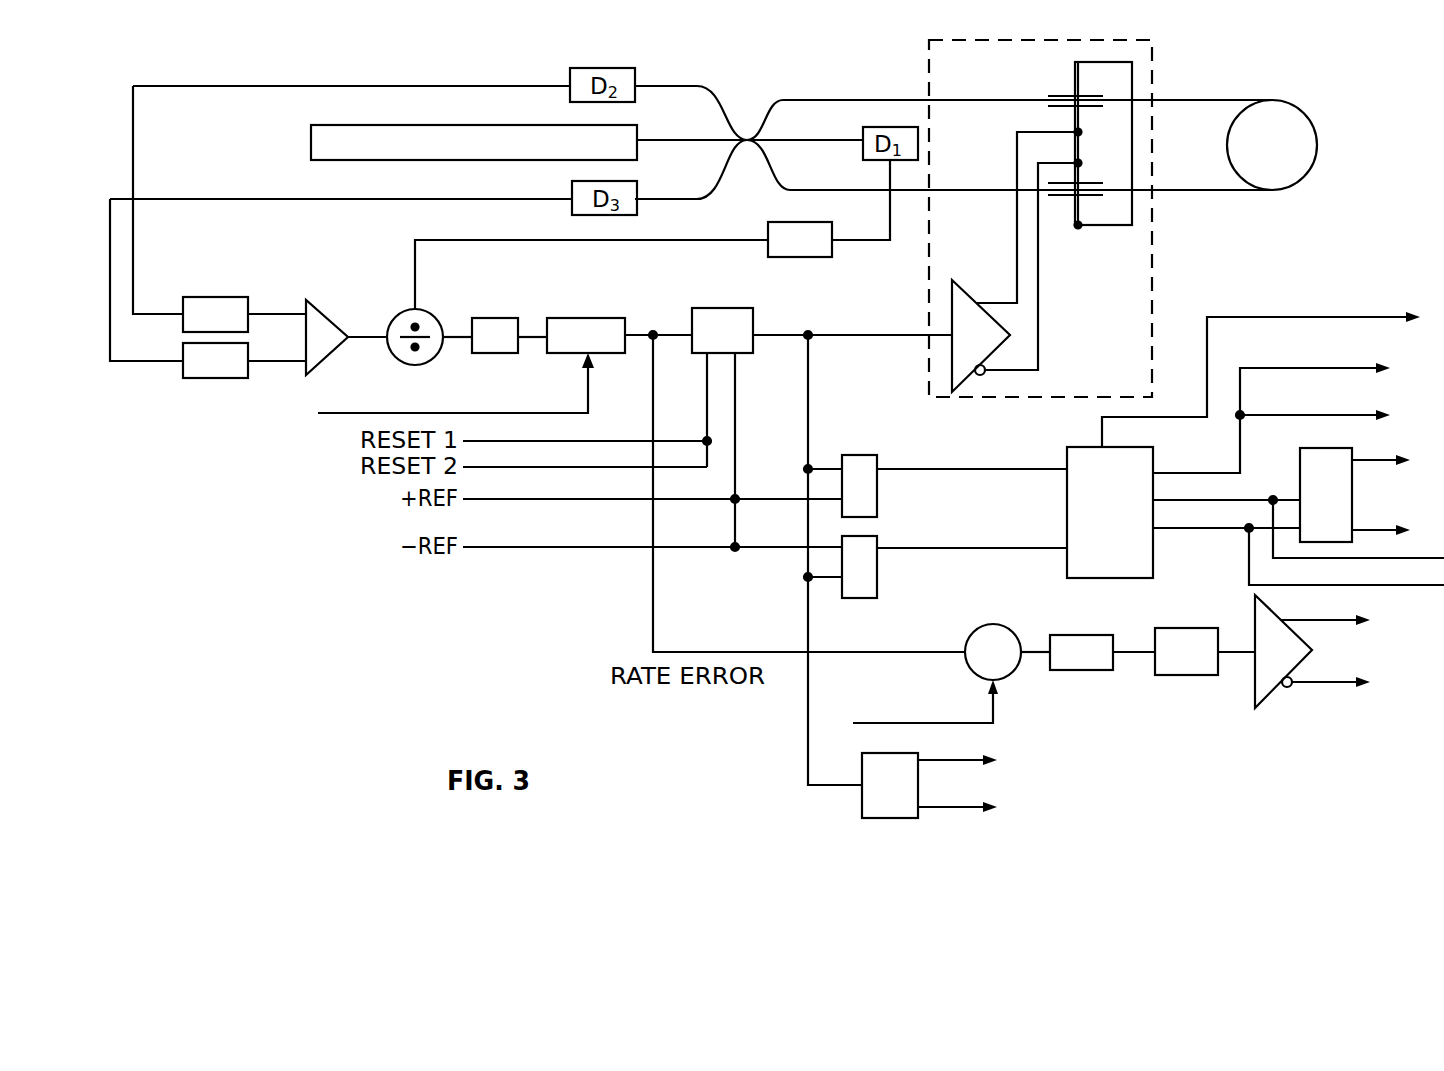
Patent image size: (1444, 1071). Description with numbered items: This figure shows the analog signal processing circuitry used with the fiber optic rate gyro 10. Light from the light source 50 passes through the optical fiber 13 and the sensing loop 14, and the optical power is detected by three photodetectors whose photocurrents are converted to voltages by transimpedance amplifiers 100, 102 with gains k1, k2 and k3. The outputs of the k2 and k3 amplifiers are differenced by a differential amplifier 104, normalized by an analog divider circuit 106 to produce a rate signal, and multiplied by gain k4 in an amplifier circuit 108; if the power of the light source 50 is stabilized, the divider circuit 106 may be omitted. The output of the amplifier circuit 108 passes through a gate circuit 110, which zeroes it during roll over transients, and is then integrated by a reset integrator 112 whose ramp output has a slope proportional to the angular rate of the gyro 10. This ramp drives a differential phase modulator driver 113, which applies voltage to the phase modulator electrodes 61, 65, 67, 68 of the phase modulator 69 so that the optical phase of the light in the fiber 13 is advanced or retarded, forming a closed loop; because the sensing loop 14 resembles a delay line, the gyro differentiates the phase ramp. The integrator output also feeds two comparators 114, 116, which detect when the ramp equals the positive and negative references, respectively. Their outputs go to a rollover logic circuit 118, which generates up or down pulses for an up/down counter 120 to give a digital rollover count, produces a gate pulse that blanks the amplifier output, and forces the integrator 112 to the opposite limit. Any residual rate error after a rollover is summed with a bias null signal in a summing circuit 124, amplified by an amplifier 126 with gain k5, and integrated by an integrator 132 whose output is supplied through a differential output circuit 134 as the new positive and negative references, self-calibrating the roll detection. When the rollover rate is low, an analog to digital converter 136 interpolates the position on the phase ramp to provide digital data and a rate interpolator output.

The rate gyro 10 is at (1226, 57).
The optical fiber 13 is at (1235, 192).
The sensing loop 14 is at (1297, 185).
The light source 50 is at (311, 150).
The phase modulator electrode 61 is at (1093, 181).
The phase modulator electrode 65 is at (1052, 108).
The phase modulator electrode 67 is at (1066, 200).
The phase modulator electrode 68 is at (1058, 94).
The phase modulator 69 is at (1152, 262).
The transimpedance amplifier 100 is at (790, 258).
The transimpedance amplifier 102 is at (197, 297).
The differential amplifier 104 is at (302, 305).
The analog divider circuit 106 is at (392, 315).
The amplifier circuit 108 is at (486, 318).
The gate circuit 110 is at (588, 318).
The reset integrator 112 is at (720, 308).
The differential phase modulator driver 113 is at (970, 290).
The comparator 114 is at (858, 455).
The comparator 116 is at (877, 585).
The rollover logic circuit 118 is at (1153, 563).
The up/down counter 120 is at (1352, 458).
The summing circuit 124 is at (1010, 627).
The amplifier 126 is at (1098, 672).
The integrator 132 is at (1190, 678).
The differential output circuit 134 is at (1265, 706).
The analog to digital converter 136 is at (862, 805).